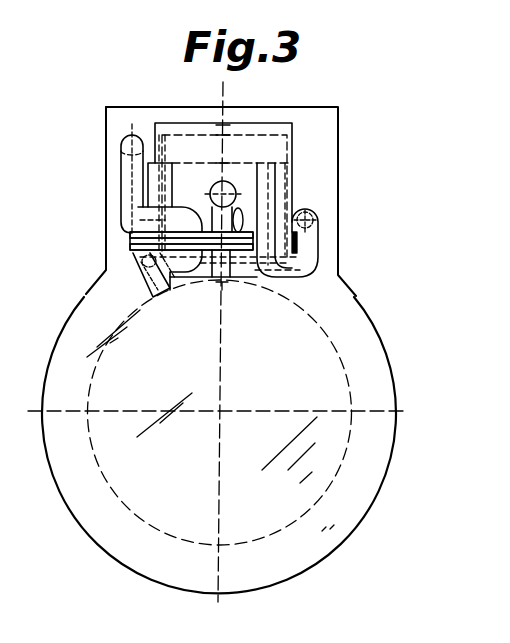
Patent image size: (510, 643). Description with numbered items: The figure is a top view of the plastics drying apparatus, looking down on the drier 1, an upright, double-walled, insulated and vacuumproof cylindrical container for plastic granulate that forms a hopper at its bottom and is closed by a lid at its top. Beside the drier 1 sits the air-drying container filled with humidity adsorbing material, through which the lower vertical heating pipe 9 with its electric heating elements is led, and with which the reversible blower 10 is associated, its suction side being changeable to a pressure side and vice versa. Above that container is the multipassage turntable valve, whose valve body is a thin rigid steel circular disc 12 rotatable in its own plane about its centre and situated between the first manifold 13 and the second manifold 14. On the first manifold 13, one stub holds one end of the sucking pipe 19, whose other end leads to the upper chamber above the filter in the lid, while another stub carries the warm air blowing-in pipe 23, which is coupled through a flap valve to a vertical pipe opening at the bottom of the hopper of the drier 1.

The drier 1 is at (341, 358).
The lower vertical heating pipe 9 is at (236, 193).
The reversible blower 10 is at (12, 0).
The circular disc 12 is at (130, 241).
The first manifold 13 is at (130, 250).
The second manifold 14 is at (130, 234).
The sucking pipe 19 is at (150, 288).
The warm air blowing-in pipe 23 is at (231, 280).